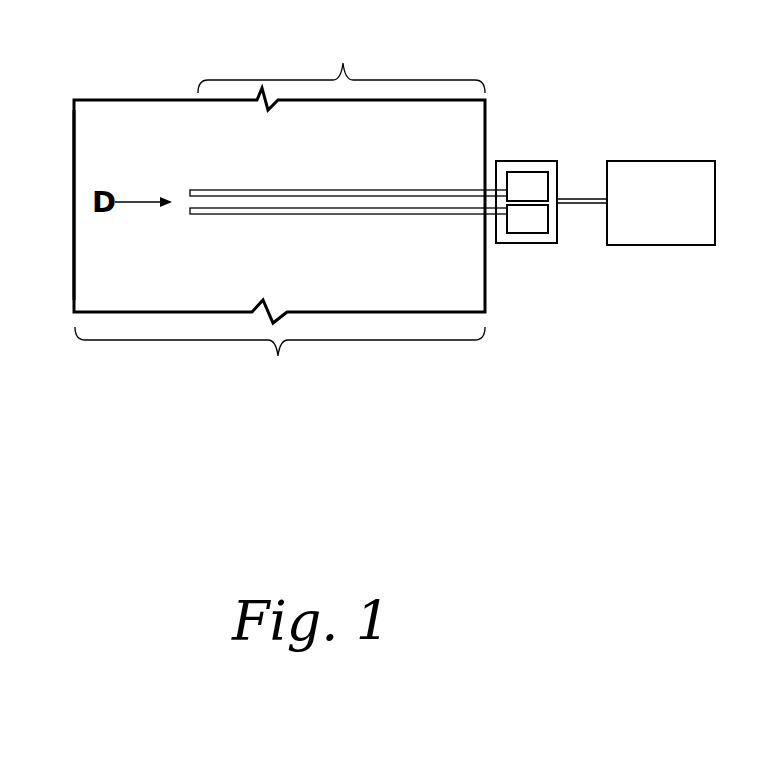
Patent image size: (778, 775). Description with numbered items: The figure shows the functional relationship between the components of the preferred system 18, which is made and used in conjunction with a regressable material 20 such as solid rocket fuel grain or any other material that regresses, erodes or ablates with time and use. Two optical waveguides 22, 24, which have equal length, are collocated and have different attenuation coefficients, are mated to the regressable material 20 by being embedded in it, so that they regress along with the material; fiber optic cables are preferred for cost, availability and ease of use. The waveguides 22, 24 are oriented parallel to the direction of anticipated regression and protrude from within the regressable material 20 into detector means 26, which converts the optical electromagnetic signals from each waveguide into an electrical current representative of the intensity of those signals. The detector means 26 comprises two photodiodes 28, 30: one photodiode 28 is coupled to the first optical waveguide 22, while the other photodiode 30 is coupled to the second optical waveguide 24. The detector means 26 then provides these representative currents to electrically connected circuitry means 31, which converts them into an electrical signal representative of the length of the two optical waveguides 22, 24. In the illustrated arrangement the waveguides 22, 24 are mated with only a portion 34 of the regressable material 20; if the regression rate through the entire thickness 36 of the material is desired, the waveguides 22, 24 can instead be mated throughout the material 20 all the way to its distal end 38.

The system 18 is at (549, 143).
The regressable material 20 is at (256, 272).
The first optical waveguide 22 is at (281, 189).
The second optical waveguide 24 is at (283, 216).
The detector means 26 is at (518, 160).
The photodiode 28 is at (540, 186).
The photodiode 30 is at (525, 228).
The circuitry means 31 is at (675, 213).
The portion of the regressable material 34 is at (341, 61).
The thickness of the material 36 is at (280, 362).
The distal end 38 is at (72, 140).